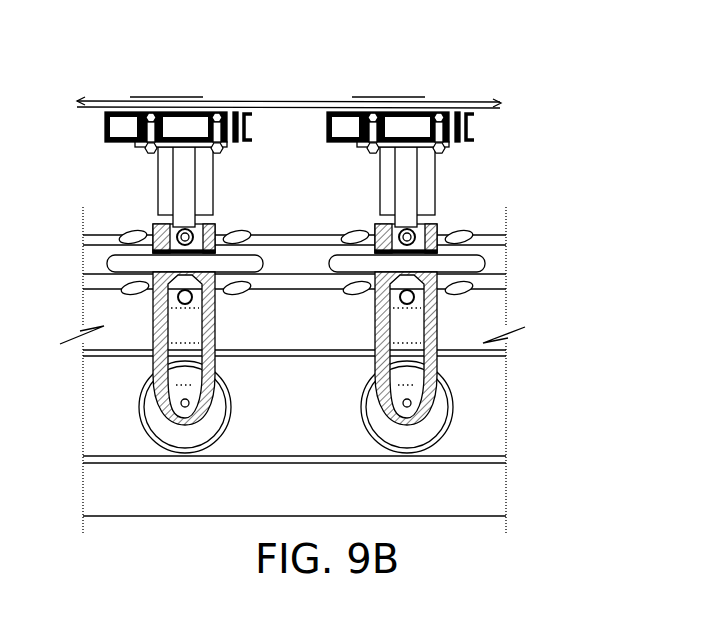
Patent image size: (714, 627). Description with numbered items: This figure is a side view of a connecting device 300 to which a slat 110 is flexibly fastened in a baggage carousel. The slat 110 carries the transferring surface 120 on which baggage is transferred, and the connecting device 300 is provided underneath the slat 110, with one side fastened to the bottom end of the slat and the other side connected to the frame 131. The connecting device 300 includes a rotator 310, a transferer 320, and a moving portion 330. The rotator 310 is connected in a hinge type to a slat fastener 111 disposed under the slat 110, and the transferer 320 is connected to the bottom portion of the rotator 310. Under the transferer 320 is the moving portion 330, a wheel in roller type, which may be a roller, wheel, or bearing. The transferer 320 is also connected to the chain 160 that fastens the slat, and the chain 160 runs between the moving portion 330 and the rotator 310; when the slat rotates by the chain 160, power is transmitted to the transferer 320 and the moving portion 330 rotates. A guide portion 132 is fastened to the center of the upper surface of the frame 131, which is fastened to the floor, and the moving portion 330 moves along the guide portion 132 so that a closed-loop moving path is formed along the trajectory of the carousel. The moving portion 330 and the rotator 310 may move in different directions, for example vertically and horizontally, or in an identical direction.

The connecting device 300 is at (321, 268).
The slat 110 is at (323, 123).
The transferring surface 120 is at (448, 97).
The slat fastener 111 is at (438, 180).
The rotator 310 is at (408, 193).
The chain 160 is at (300, 235).
The transferer 320 is at (443, 317).
The moving portion 330 is at (440, 400).
The guide portion 132 is at (305, 363).
The frame 131 is at (498, 495).